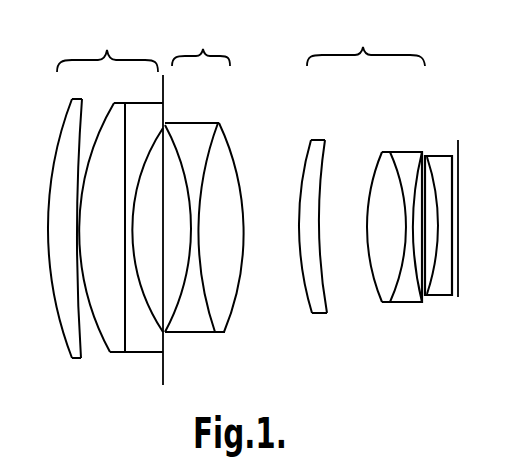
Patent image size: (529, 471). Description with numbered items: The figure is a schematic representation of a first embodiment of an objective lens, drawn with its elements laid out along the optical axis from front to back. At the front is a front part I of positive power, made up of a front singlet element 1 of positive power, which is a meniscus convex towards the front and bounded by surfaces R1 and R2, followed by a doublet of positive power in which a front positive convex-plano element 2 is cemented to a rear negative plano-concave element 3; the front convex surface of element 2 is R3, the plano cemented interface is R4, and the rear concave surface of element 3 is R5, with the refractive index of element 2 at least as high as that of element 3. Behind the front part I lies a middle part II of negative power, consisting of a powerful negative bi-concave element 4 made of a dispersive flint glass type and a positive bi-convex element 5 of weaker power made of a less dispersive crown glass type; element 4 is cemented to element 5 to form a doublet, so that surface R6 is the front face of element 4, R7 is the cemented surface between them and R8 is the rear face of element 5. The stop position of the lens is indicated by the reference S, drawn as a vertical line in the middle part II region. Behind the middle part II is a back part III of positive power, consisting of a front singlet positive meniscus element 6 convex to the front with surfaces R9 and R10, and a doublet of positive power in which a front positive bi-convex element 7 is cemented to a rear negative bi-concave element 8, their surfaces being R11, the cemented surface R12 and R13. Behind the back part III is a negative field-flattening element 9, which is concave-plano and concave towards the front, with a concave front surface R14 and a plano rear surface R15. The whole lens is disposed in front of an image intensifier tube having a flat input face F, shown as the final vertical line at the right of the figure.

The front singlet element 1 is at (66, 242).
The front positive convex-plano element 2 is at (102, 251).
The rear negative plano-concave element 3 is at (149, 251).
The negative bi-concave element 4 is at (184, 246).
The positive bi-convex element 5 is at (249, 234).
The front singlet positive meniscus element 6 is at (313, 233).
The front positive bi-convex element 7 is at (370, 245).
The rear negative bi-concave element 8 is at (444, 245).
The negative field-flattening element 9 is at (445, 225).
The stop position S is at (165, 370).
The flat input face F is at (458, 297).
The front part I is at (113, 38).
The middle part II is at (213, 38).
The back part III is at (375, 38).
The surface R1 is at (65, 118).
The surface R2 is at (83, 102).
The surface R3 is at (89, 150).
The surface R4 is at (126, 124).
The surface R5 is at (134, 254).
The surface R6 is at (186, 185).
The surface R7 is at (200, 254).
The surface R8 is at (229, 143).
The surface R9 is at (304, 287).
The surface R10 is at (325, 151).
The surface R11 is at (378, 286).
The surface R12 is at (406, 230).
The surface R13 is at (414, 226).
The surface R14 is at (429, 171).
The surface R15 is at (458, 188).